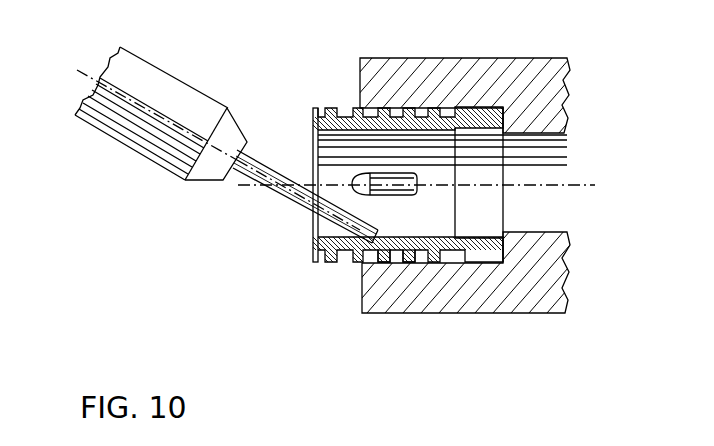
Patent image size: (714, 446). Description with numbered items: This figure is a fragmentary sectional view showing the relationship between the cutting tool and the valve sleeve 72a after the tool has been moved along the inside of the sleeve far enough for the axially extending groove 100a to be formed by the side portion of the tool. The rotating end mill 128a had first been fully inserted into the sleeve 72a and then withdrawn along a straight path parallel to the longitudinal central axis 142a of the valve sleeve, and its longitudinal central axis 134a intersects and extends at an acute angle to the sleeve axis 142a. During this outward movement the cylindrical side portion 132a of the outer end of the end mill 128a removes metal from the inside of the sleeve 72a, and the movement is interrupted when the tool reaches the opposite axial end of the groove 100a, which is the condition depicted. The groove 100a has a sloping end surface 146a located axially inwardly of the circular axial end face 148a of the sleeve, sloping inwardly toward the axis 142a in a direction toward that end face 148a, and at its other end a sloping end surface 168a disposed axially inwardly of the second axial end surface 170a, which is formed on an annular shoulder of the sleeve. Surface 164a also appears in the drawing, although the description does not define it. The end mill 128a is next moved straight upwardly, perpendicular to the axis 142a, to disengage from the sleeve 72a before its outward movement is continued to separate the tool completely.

The longitudinal central axis 134a is at (100, 77).
The end mill 128a is at (273, 195).
The longitudinal central axis 142a is at (550, 180).
The valve sleeve 72a is at (505, 218).
The cylindrical side portion 132a is at (385, 240).
The second axial end surface 170a is at (483, 225).
The circular axial end face 148a is at (313, 248).
The sloping end surface 146a is at (343, 257).
The latch tab 164a is at (400, 243).
The sloping end surface 168a is at (410, 242).
The axially extending groove 100a is at (469, 260).